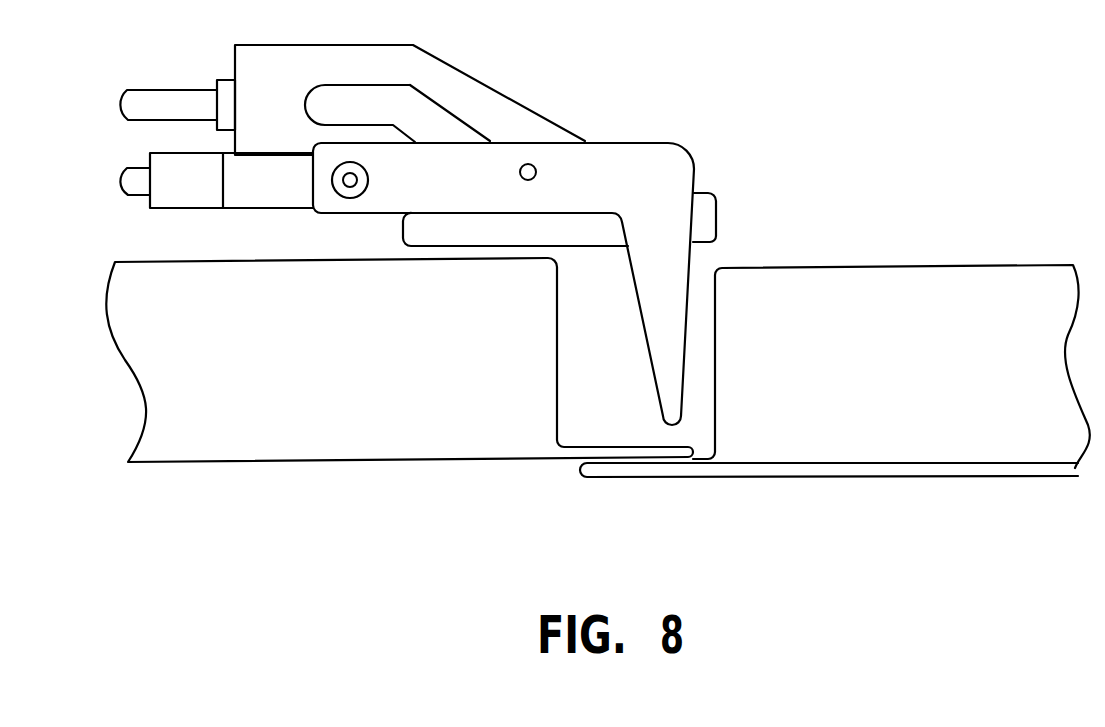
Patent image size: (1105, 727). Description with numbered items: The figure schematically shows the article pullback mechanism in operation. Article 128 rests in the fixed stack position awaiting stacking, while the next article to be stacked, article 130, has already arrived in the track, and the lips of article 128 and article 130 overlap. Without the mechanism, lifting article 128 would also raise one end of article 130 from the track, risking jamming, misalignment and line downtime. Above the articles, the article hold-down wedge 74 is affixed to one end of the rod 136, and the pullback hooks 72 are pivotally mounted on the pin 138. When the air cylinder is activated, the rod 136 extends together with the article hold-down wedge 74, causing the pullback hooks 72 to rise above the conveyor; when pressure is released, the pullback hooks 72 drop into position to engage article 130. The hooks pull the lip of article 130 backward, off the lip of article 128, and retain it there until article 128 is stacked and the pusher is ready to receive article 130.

The pullback hooks 72 is at (677, 145).
The article hold-down wedge 74 is at (472, 75).
The article 128 is at (928, 265).
The article 130 is at (287, 465).
The rod 136 is at (170, 90).
The pin 138 is at (355, 177).